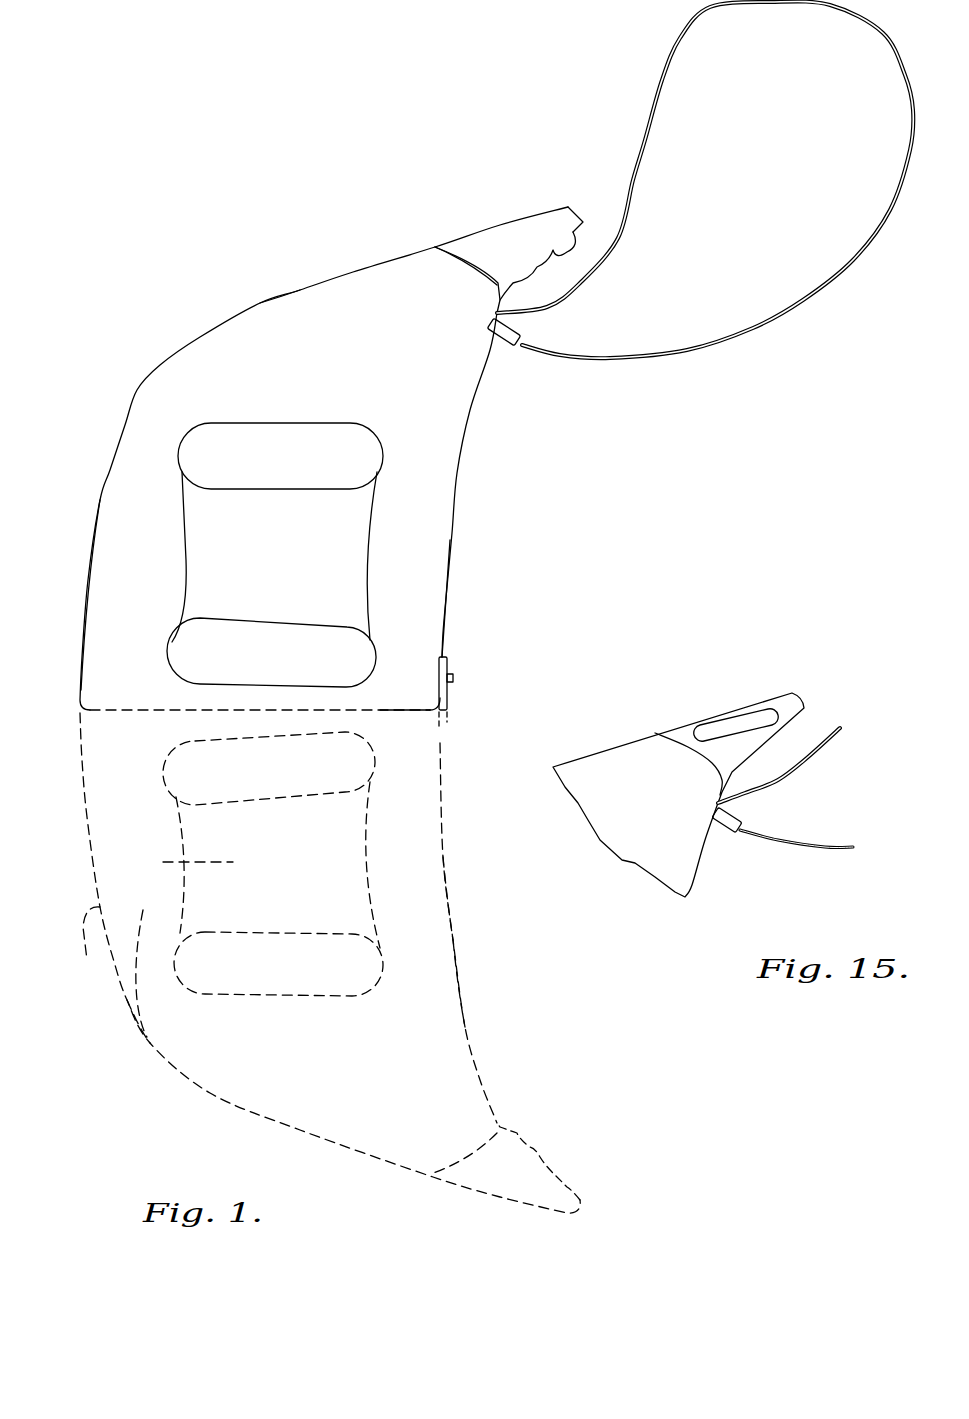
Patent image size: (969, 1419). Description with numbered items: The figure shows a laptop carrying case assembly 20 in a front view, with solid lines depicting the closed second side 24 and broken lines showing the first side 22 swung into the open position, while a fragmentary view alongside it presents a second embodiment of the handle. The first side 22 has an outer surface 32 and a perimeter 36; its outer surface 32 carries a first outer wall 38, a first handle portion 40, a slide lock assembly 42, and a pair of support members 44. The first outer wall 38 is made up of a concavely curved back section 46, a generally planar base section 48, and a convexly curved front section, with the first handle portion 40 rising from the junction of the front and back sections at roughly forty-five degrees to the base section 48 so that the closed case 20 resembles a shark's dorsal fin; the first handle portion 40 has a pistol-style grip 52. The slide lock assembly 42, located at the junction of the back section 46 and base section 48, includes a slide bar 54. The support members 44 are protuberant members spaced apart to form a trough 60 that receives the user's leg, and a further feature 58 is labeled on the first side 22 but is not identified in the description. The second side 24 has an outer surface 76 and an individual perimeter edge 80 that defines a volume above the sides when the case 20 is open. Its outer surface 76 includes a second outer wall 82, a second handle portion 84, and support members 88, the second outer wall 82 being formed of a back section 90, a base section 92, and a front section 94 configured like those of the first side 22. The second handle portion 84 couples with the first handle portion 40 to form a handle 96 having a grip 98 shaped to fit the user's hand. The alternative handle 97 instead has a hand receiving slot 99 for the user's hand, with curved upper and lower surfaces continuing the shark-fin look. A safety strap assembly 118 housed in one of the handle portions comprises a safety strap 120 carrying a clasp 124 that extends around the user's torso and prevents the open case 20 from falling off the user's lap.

In FIG. 1, the laptop carrying case assembly 20 is at (307, 135).
In FIG. 1, the first side 22 is at (455, 1035).
In FIG. 1, the second side 24 is at (380, 327).
In FIG. 1, the outer surface 32 is at (133, 1013).
In FIG. 1, the perimeter 36 is at (150, 1047).
In FIG. 1, the first outer wall 38 is at (443, 860).
In FIG. 1, the first handle portion 40 is at (497, 1182).
In FIG. 1, the slide lock assembly 42 is at (450, 720).
In FIG. 1, the support members 44 is at (195, 768).
In FIG. 1, the back section 46 is at (453, 940).
In FIG. 1, the base section 48 is at (392, 712).
In FIG. 1, the grip 52 is at (547, 1153).
In FIG. 1, the slide bar 54 is at (455, 677).
In FIG. 1, the strap loop 58 is at (86, 949).
In FIG. 1, the trough 60 is at (180, 862).
In FIG. 1, the outer surface 76 is at (123, 505).
In FIG. 1, the individual perimeter edge 80 is at (447, 570).
In FIG. 1, the second outer wall 82 is at (193, 340).
In FIG. 1, the second handle portion 84 is at (505, 232).
In FIG. 1, the support members 88 is at (292, 435).
In FIG. 1, the back section 90 is at (460, 447).
In FIG. 1, the base section 92 is at (172, 708).
In FIG. 1, the front section 94 is at (300, 290).
In FIG. 1, the handle 96 is at (560, 213).
In FIG. 15, the handle 97 is at (685, 730).
In FIG. 1, the grip 98 is at (567, 257).
In FIG. 15, the hand receiving slot 99 is at (732, 722).
In FIG. 1, the safety strap assembly 118 is at (613, 303).
In FIG. 1, the safety strap 120 is at (660, 87).
In FIG. 1, the clasp 124 is at (498, 342).